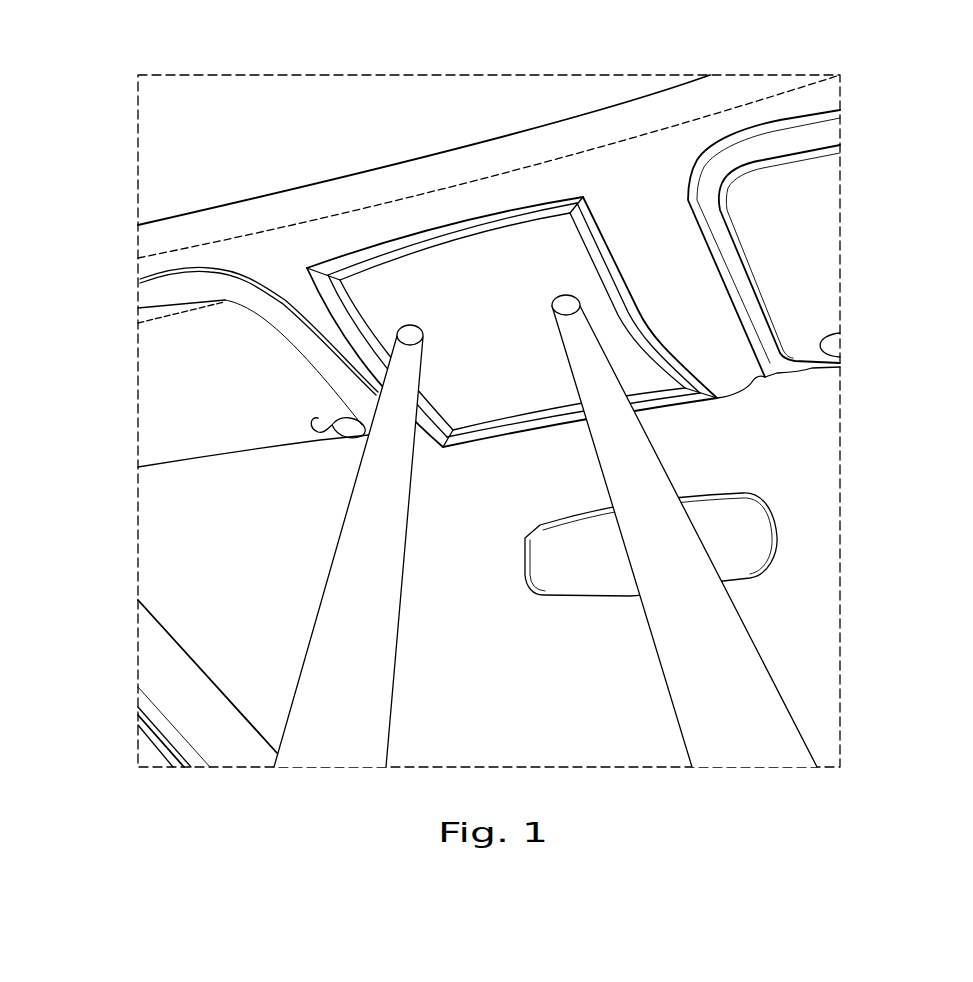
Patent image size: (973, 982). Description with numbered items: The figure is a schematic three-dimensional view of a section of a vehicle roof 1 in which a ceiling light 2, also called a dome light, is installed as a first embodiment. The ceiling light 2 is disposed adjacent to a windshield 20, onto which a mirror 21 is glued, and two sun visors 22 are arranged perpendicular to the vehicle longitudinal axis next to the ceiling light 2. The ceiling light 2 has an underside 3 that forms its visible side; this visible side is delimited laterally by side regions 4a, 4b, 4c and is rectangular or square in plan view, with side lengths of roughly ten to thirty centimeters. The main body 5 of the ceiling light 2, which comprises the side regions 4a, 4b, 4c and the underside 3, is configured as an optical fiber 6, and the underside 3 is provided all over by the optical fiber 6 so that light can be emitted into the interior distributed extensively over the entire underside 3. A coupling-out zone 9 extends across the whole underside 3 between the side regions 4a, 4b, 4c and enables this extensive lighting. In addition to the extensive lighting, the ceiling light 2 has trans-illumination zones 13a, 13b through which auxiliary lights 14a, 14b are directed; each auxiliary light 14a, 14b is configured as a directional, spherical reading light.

The vehicle roof 1 is at (884, 93).
The ceiling light 2 is at (489, 173).
The main body 5 is at (433, 272).
The underside 3 is at (512, 322).
The optical fiber 6 is at (512, 322).
The coupling-out zone 9 is at (525, 347).
The side region 4a is at (317, 295).
The side region 4b is at (600, 220).
The side region 4c is at (477, 205).
The trans-illumination zone 13a is at (408, 334).
The trans-illumination zone 13b is at (570, 300).
The auxiliary light 14a is at (353, 543).
The auxiliary light 14b is at (630, 442).
The windshield 20 is at (572, 492).
The mirror 21 is at (755, 538).
The sun visor 22 is at (173, 404).